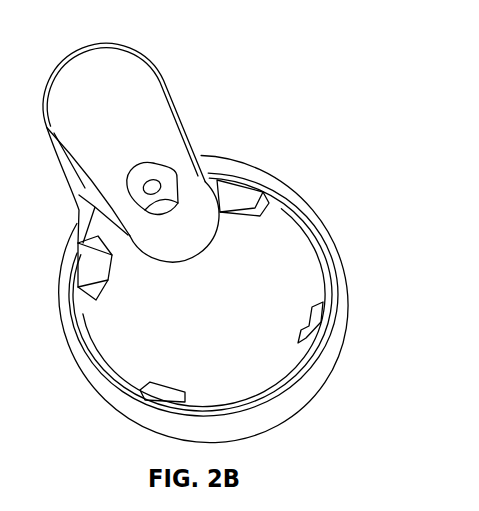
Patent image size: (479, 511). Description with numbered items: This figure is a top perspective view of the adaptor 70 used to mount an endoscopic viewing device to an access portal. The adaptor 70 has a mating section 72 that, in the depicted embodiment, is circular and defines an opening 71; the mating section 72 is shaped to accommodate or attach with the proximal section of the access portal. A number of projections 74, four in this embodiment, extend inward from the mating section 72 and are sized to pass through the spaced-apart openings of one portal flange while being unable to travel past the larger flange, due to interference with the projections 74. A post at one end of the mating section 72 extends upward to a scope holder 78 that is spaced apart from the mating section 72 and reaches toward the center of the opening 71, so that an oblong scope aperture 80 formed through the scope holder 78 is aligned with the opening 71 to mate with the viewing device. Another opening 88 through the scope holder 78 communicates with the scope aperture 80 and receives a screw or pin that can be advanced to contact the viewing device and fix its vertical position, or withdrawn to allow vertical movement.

The adaptor 70 is at (291, 66).
The opening 71 is at (128, 343).
The mating section 72 is at (343, 310).
The projections 74 is at (245, 190).
The scope holder 78 is at (153, 78).
The scope aperture 80 is at (133, 236).
The opening 88 is at (152, 186).